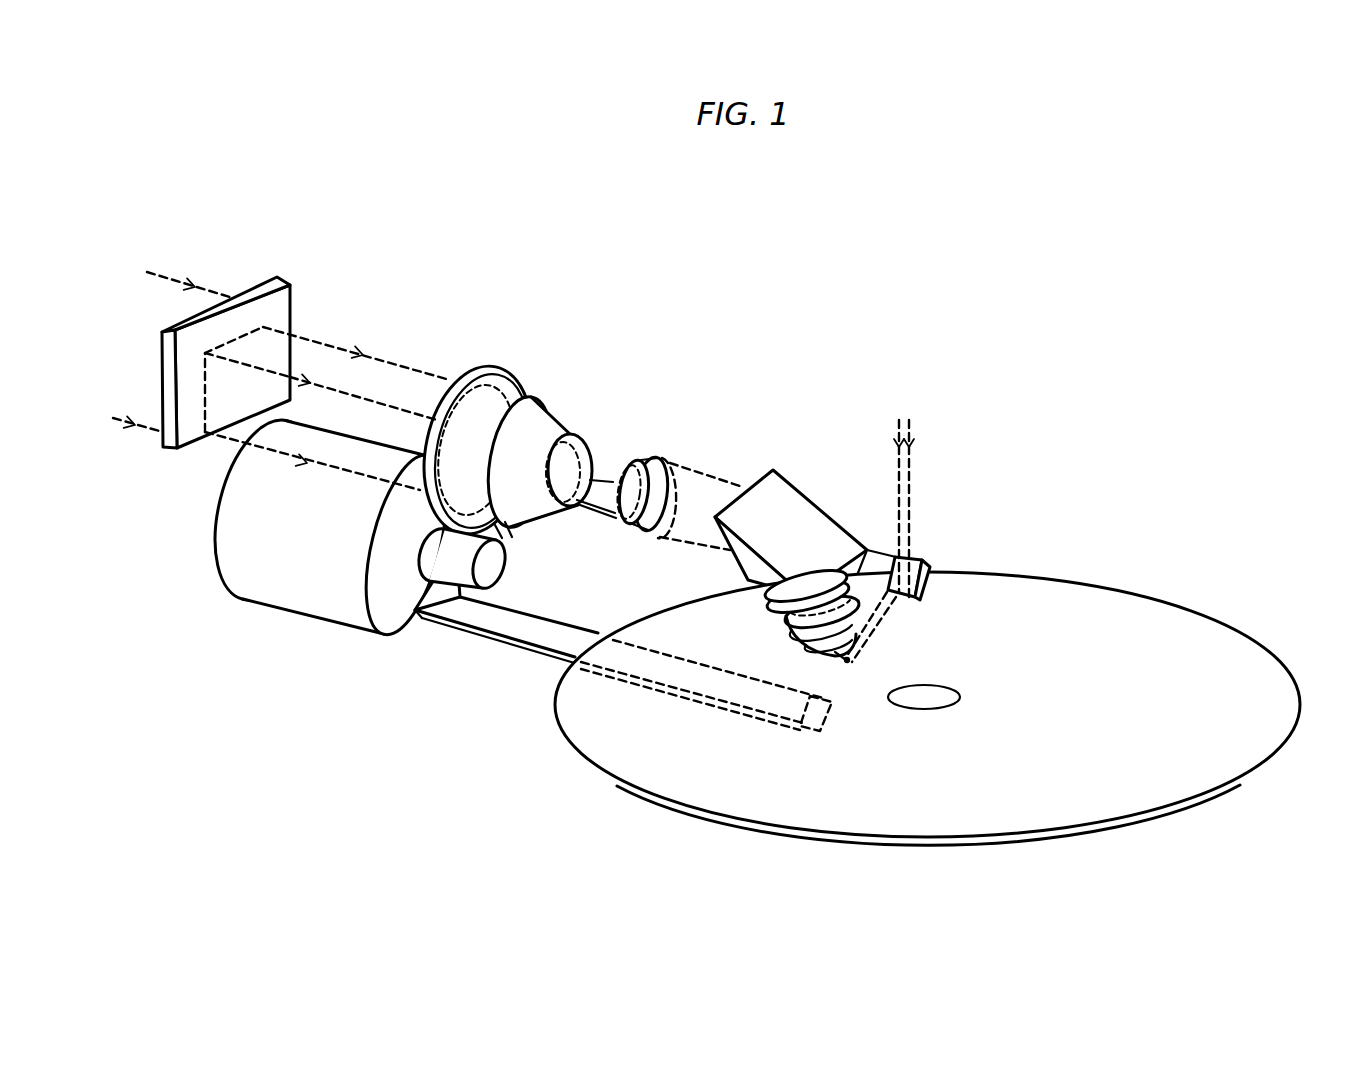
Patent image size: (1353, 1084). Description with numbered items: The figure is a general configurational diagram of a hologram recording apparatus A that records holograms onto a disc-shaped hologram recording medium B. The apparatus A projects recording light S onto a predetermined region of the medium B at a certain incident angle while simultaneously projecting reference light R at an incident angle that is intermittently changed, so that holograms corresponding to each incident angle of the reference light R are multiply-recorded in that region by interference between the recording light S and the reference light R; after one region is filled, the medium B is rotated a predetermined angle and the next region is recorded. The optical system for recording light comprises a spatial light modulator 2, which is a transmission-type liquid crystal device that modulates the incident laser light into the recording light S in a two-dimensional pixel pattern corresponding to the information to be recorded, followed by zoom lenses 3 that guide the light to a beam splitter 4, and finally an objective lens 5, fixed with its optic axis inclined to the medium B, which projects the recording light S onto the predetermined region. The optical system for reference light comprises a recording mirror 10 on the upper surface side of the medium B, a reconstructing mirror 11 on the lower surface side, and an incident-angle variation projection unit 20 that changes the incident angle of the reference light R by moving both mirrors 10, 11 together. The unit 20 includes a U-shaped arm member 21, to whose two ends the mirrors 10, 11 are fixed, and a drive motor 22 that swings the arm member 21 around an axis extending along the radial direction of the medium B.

The spatial light modulator 2 is at (280, 278).
The zoom lenses 3 is at (630, 460).
The beam splitter 4 is at (800, 482).
The objective lens 5 is at (797, 632).
The recording mirror 10 is at (923, 560).
The reconstructing mirror 11 is at (800, 732).
The incident-angle variation projection unit 20 is at (398, 640).
The arm member 21 is at (507, 627).
The drive motor 22 is at (357, 617).
The hologram recording apparatus A is at (652, 390).
The recording light S is at (697, 470).
The reference light R is at (913, 465).
The hologram recording medium B is at (1253, 653).